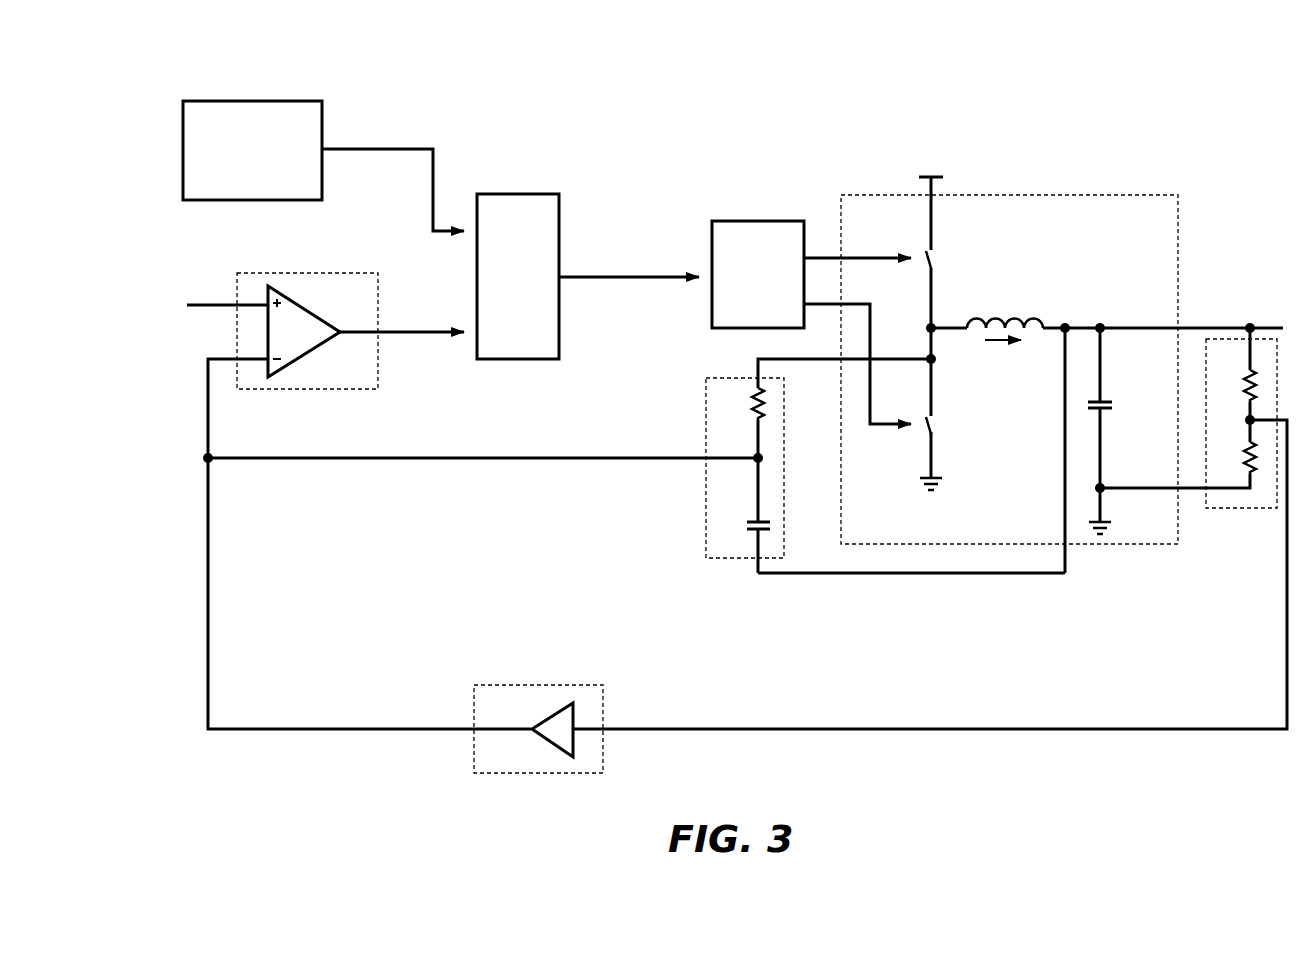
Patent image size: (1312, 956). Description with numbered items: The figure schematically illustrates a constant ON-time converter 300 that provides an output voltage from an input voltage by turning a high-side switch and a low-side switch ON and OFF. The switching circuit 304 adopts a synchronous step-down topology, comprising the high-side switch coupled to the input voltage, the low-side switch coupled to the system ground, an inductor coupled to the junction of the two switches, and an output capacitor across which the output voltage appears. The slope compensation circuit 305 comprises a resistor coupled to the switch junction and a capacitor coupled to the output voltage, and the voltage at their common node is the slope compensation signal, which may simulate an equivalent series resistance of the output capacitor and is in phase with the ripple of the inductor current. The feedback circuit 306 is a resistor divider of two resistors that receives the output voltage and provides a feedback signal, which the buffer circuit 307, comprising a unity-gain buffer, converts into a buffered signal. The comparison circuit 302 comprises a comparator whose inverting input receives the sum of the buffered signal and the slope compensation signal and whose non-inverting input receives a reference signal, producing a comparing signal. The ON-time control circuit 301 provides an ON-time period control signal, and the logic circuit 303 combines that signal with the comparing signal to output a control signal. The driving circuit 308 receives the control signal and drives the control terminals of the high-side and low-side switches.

The constant ON-time converter 300 is at (1140, 108).
The ON-time control circuit 301 is at (210, 200).
The comparison circuit 302 is at (272, 390).
The logic circuit 303 is at (507, 360).
The switching circuit 304 is at (1178, 200).
The slope compensation circuit 305 is at (705, 512).
The feedback circuit 306 is at (1270, 508).
The buffer circuit 307 is at (478, 773).
The driving circuit 308 is at (745, 222).